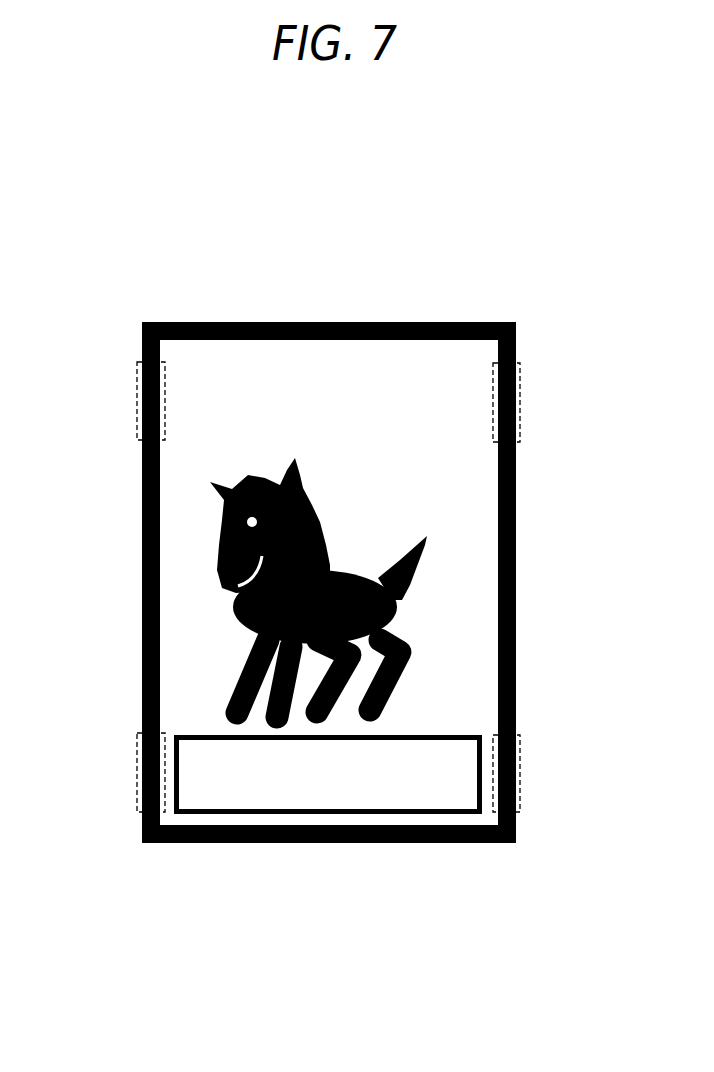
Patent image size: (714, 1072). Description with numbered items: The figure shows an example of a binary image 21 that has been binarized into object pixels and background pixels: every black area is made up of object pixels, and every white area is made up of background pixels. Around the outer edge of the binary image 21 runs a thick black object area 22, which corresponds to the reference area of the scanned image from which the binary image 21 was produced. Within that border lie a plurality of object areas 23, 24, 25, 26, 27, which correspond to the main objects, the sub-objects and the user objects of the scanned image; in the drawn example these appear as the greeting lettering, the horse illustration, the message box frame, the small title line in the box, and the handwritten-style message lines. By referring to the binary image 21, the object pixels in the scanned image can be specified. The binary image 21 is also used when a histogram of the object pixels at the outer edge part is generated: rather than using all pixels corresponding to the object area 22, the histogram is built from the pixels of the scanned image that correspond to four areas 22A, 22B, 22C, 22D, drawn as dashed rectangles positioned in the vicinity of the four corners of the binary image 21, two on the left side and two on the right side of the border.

The binary image 21 is at (416, 269).
The object area 22 is at (488, 322).
The area 22A is at (137, 405).
The area 22B is at (520, 406).
The area 22C is at (137, 766).
The area 22D is at (520, 773).
The object area 23 is at (447, 452).
The object area 24 is at (400, 611).
The object area 25 is at (430, 736).
The object area 26 is at (374, 749).
The object area 27 is at (312, 802).